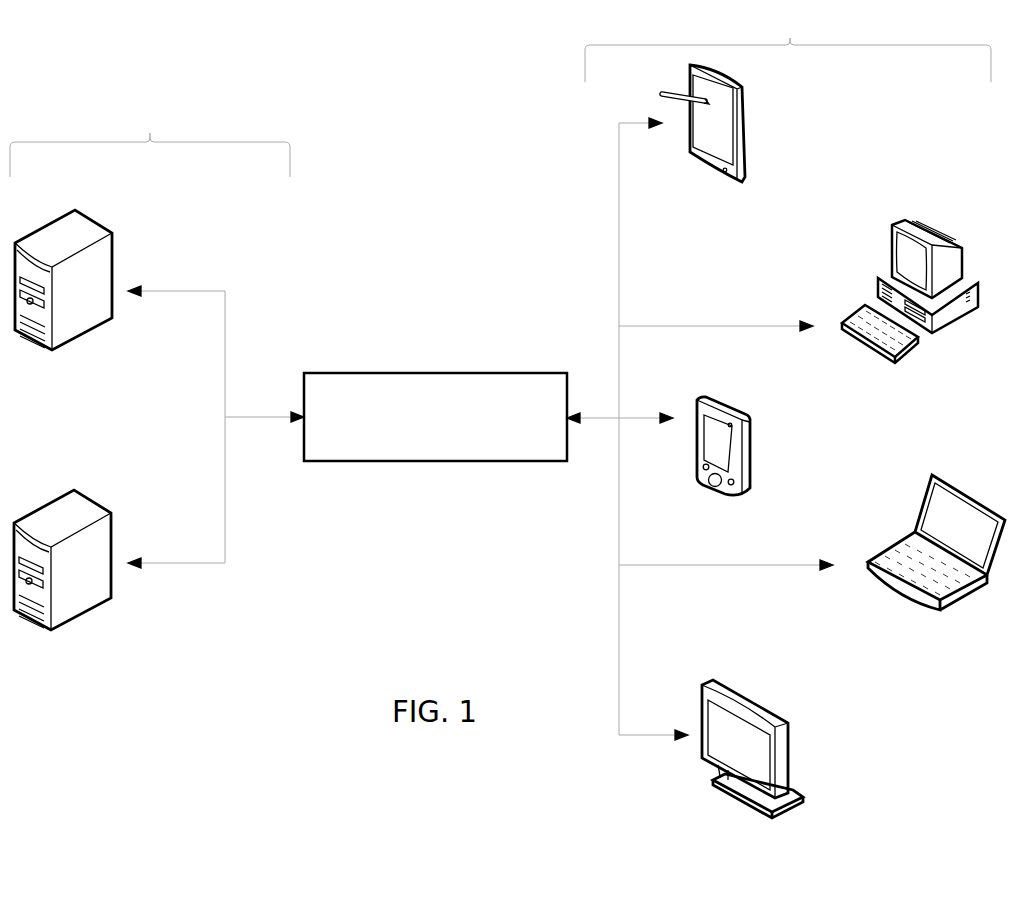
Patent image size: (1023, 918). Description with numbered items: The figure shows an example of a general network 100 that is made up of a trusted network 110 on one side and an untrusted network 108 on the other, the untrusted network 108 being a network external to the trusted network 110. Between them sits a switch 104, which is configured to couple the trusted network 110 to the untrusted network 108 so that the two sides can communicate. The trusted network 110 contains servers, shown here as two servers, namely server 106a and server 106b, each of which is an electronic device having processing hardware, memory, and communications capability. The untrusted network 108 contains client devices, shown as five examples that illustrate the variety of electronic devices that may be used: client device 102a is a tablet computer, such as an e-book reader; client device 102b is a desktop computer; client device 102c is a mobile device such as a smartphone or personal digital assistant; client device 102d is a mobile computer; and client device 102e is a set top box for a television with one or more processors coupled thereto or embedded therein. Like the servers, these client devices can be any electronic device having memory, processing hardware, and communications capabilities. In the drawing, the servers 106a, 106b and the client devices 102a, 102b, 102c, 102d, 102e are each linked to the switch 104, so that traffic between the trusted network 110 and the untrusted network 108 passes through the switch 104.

The general network 100 is at (415, 65).
The client device 102a is at (704, 142).
The client device 102b is at (910, 307).
The client device 102c is at (723, 462).
The client device 102d is at (936, 561).
The client device 102e is at (752, 767).
The switch 104 is at (435, 417).
The server 106a is at (63, 301).
The server 106b is at (62, 582).
The untrusted network 108 is at (788, 45).
The trusted network 110 is at (150, 140).